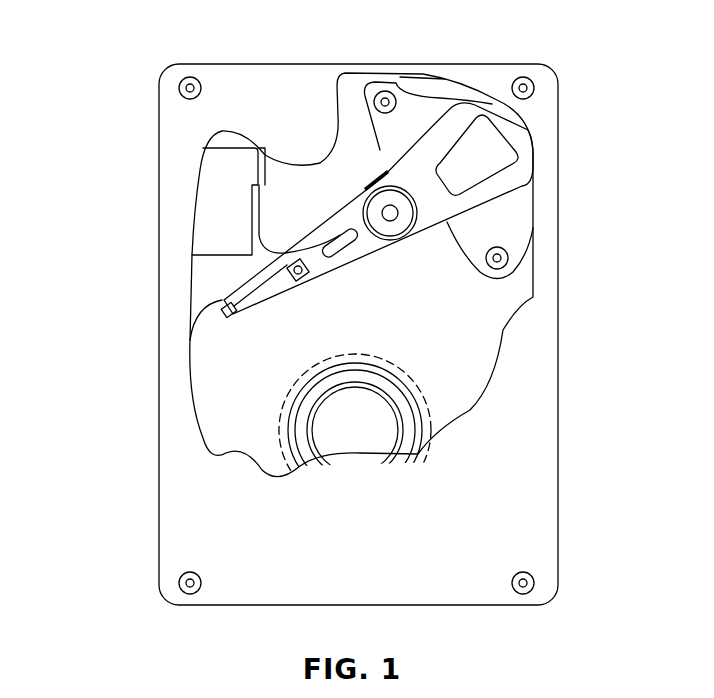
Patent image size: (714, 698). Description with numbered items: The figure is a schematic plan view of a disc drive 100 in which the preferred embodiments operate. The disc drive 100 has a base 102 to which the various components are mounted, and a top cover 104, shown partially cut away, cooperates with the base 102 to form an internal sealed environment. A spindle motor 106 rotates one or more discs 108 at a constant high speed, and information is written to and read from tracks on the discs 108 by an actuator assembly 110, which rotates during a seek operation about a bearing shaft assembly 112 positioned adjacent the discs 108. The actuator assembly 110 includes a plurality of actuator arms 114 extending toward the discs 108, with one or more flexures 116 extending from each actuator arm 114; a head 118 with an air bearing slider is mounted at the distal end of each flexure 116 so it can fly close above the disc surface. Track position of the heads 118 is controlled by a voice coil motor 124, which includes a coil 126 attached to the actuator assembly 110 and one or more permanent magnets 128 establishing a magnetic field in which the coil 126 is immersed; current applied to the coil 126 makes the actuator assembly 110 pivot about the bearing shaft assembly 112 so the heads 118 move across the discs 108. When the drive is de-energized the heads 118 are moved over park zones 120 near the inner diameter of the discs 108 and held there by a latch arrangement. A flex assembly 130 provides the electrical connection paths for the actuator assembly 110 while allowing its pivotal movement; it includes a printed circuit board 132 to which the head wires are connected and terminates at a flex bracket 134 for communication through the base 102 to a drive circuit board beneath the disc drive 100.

The disc drive 100 is at (130, 53).
The base 102 is at (200, 265).
The top cover 104 is at (200, 512).
The spindle motor 106 is at (352, 430).
The discs 108 is at (460, 380).
The actuator assembly 110 is at (370, 232).
The bearing shaft assembly 112 is at (390, 213).
The actuator arms 114 is at (345, 263).
The flexures 116 is at (250, 303).
The head 118 is at (225, 313).
The park zones 120 is at (278, 432).
The voice coil motor 124 is at (434, 66).
The coil 126 is at (527, 157).
The permanent magnets 128 is at (410, 122).
The flex assembly 130 is at (330, 218).
The printed circuit board 132 is at (372, 187).
The flex bracket 134 is at (217, 193).